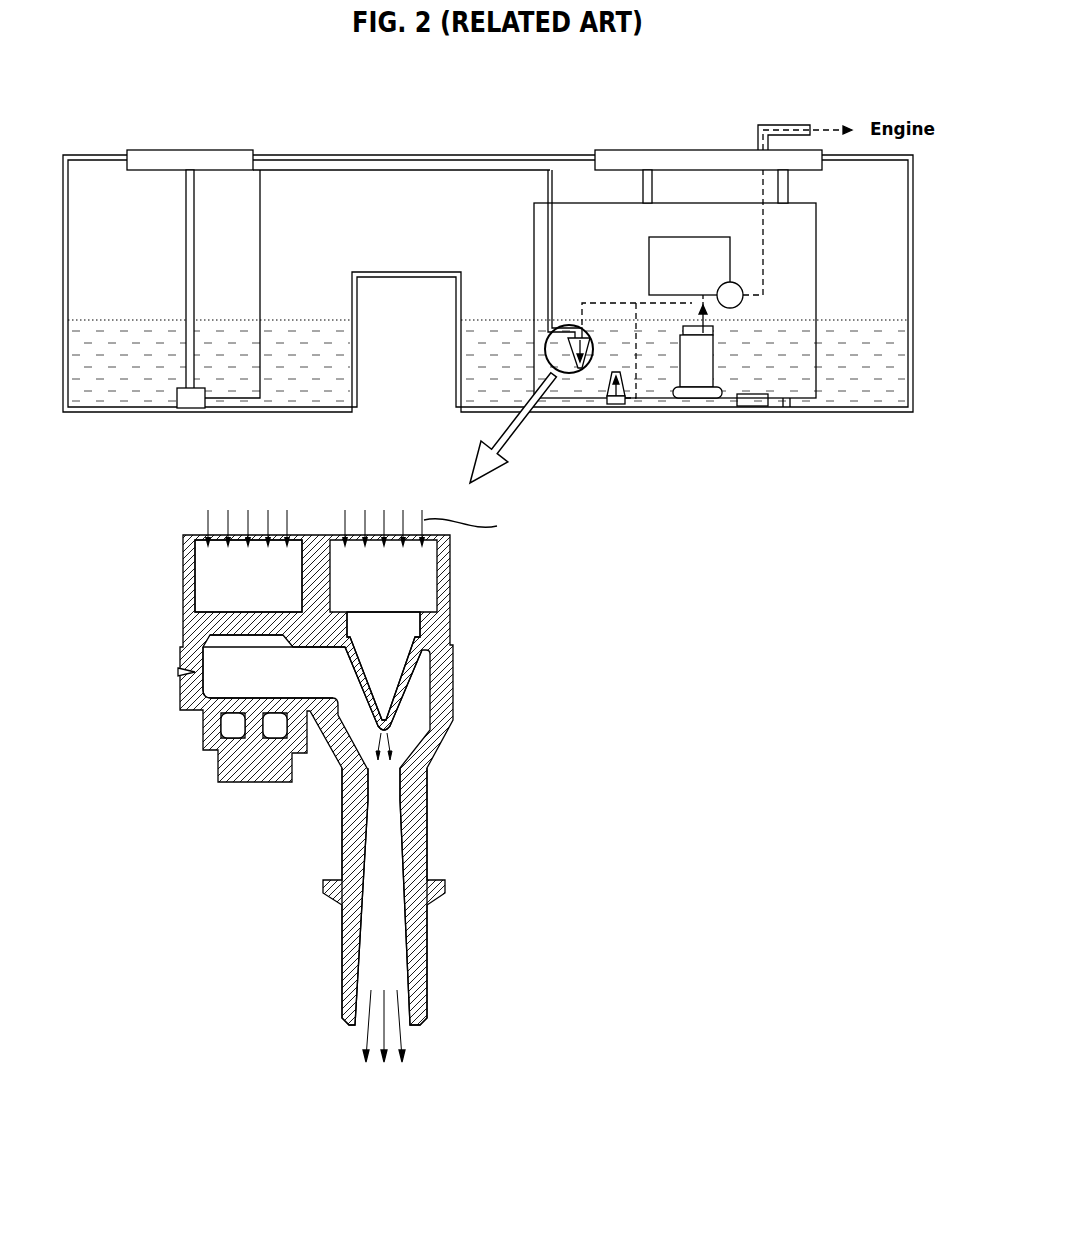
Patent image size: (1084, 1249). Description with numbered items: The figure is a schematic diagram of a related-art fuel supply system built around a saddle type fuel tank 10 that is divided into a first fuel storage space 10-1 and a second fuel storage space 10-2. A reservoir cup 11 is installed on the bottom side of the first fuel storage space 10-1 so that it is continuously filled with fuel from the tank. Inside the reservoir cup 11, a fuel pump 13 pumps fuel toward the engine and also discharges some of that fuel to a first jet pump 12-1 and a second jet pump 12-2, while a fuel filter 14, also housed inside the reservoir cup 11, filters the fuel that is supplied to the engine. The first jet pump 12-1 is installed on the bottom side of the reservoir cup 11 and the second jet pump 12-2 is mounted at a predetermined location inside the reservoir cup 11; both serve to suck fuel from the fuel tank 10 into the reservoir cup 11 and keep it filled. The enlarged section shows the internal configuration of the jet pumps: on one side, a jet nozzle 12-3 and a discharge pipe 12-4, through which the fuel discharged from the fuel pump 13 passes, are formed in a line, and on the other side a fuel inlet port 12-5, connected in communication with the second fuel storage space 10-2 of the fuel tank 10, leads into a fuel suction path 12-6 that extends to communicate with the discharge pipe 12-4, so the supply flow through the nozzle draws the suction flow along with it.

The saddle type fuel tank 10 is at (450, 148).
The first fuel storage space 10-1 is at (860, 385).
The second fuel storage space 10-2 is at (130, 374).
The reservoir cup 11 is at (817, 262).
The first jet pump 12-1 is at (608, 389).
The second jet pump 12-2 is at (572, 358).
The jet nozzle 12-3 is at (408, 702).
The discharge pipe 12-4 is at (392, 816).
The fuel inlet port 12-5 is at (208, 585).
The fuel suction path 12-6 is at (215, 680).
The fuel pump 13 is at (713, 365).
The fuel filter 14 is at (650, 258).